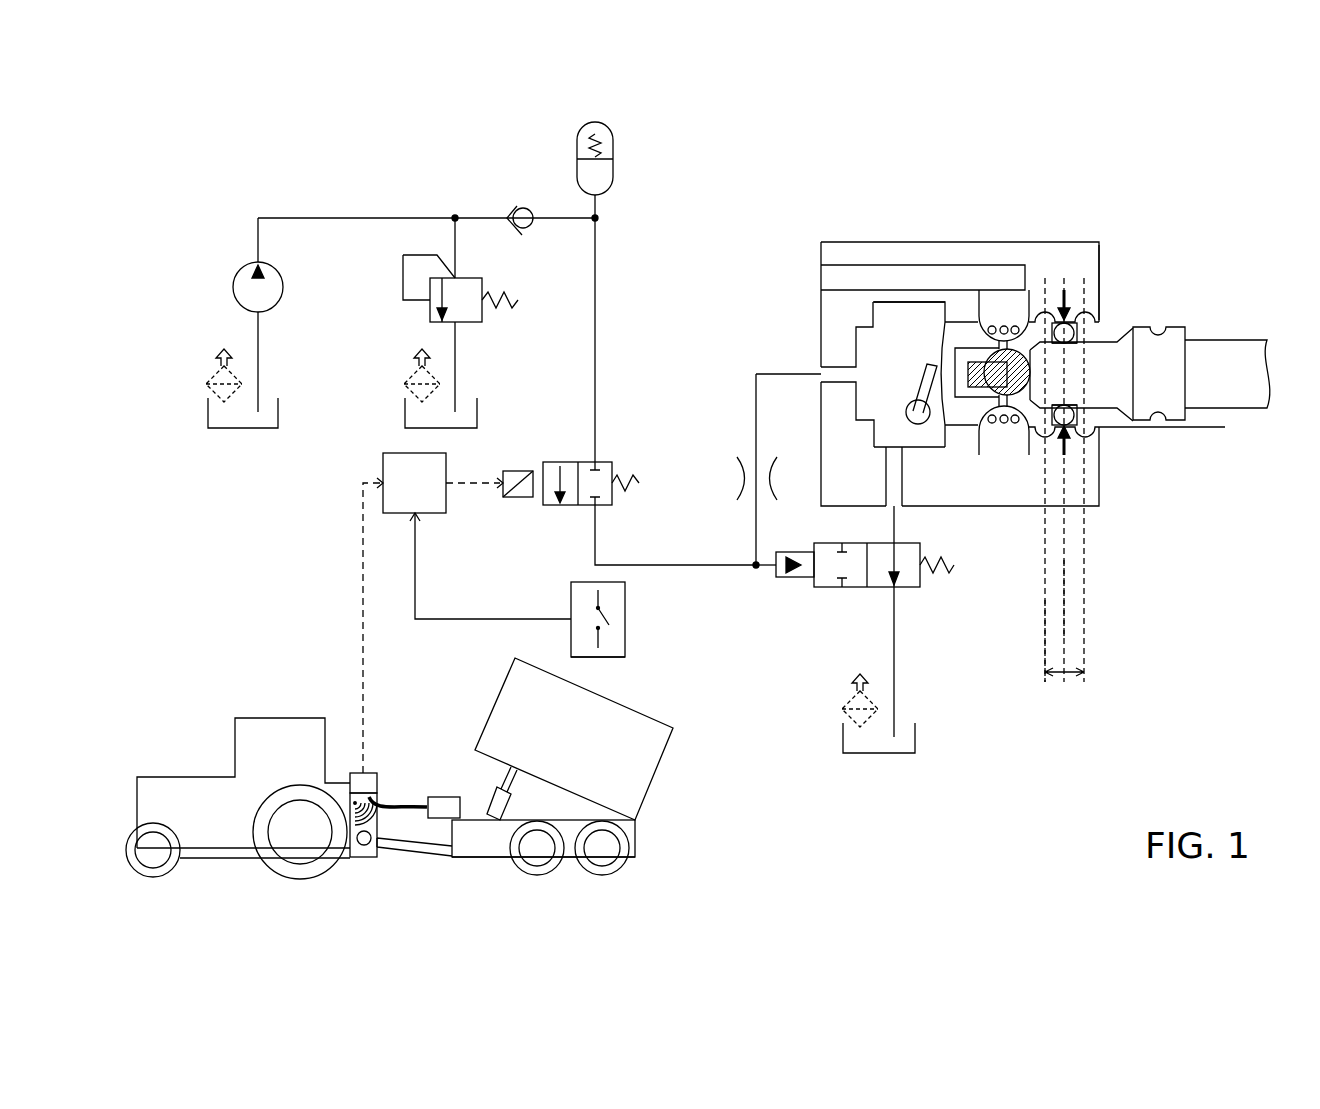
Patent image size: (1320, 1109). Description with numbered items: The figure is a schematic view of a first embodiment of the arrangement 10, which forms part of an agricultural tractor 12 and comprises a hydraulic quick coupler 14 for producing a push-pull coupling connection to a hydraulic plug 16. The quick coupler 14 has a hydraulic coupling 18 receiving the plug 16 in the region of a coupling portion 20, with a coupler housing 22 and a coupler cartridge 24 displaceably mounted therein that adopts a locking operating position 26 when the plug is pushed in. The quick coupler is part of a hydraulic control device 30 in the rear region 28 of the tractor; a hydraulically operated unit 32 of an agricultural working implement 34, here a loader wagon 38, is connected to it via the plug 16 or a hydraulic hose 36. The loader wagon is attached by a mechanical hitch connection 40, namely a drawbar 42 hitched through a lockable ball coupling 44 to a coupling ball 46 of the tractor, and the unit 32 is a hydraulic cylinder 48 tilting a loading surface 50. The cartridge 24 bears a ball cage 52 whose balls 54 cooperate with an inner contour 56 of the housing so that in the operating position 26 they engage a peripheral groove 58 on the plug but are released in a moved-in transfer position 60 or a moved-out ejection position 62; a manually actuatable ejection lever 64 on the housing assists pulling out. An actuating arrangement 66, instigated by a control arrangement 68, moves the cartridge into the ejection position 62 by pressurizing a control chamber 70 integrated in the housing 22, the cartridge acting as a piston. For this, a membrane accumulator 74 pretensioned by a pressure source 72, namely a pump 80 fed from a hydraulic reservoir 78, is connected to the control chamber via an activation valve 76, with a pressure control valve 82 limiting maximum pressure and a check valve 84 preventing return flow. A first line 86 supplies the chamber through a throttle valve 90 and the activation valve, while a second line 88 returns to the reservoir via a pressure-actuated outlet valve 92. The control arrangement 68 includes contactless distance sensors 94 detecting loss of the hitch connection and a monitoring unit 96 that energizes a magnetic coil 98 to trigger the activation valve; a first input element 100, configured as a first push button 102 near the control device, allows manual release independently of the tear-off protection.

The arrangement 10 is at (921, 163).
The agricultural tractor 12 is at (187, 723).
The hydraulic quick coupler 14 is at (1153, 214).
The hydraulic plug 16 is at (1180, 332).
The hydraulic coupling 18 is at (1105, 278).
The coupling portion 20 is at (1098, 357).
The coupler housing 22 is at (1053, 497).
The coupler cartridge 24 is at (962, 413).
The operating position 26 is at (1066, 605).
The rear region 28 is at (347, 760).
The hydraulic control device 30 is at (877, 242).
The hydraulically operated unit 32 is at (485, 863).
The agricultural working implement 34 is at (633, 873).
The hydraulic hose 36 is at (1228, 358).
The loader wagon 38 is at (532, 840).
The mechanical hitch connection 40 is at (343, 870).
The drawbar 42 is at (417, 848).
The lockable ball coupling 44 is at (383, 825).
The coupling ball 46 is at (367, 855).
The hydraulic cylinder 48 is at (492, 822).
The loading surface 50 is at (497, 702).
The ball cage 52 is at (1062, 292).
The balls 54 is at (1070, 308).
The inner contour 56 is at (1092, 430).
The peripheral groove 58 is at (1066, 343).
The transfer position 60 is at (1045, 630).
The ejection position 62 is at (1086, 658).
The ejection lever 64 is at (1210, 426).
The actuating arrangement 66 is at (863, 351).
The control arrangement 68 is at (282, 587).
The control chamber 70 is at (880, 313).
The pressure source 72 is at (237, 168).
The membrane accumulator 74 is at (613, 128).
The activation valve 76 is at (548, 462).
The hydraulic reservoir 78 is at (208, 425).
The pump 80 is at (238, 270).
The pressure control valve 82 is at (430, 307).
The check valve 84 is at (530, 207).
The first line 86 is at (755, 393).
The second line 88 is at (893, 532).
The throttle valve 90 is at (738, 458).
The outlet valve 92 is at (828, 588).
The distance sensors 94 is at (370, 777).
The monitoring unit 96 is at (393, 513).
The magnetic coil 98 is at (515, 470).
The first input element 100 is at (638, 618).
The first push button 102 is at (612, 658).